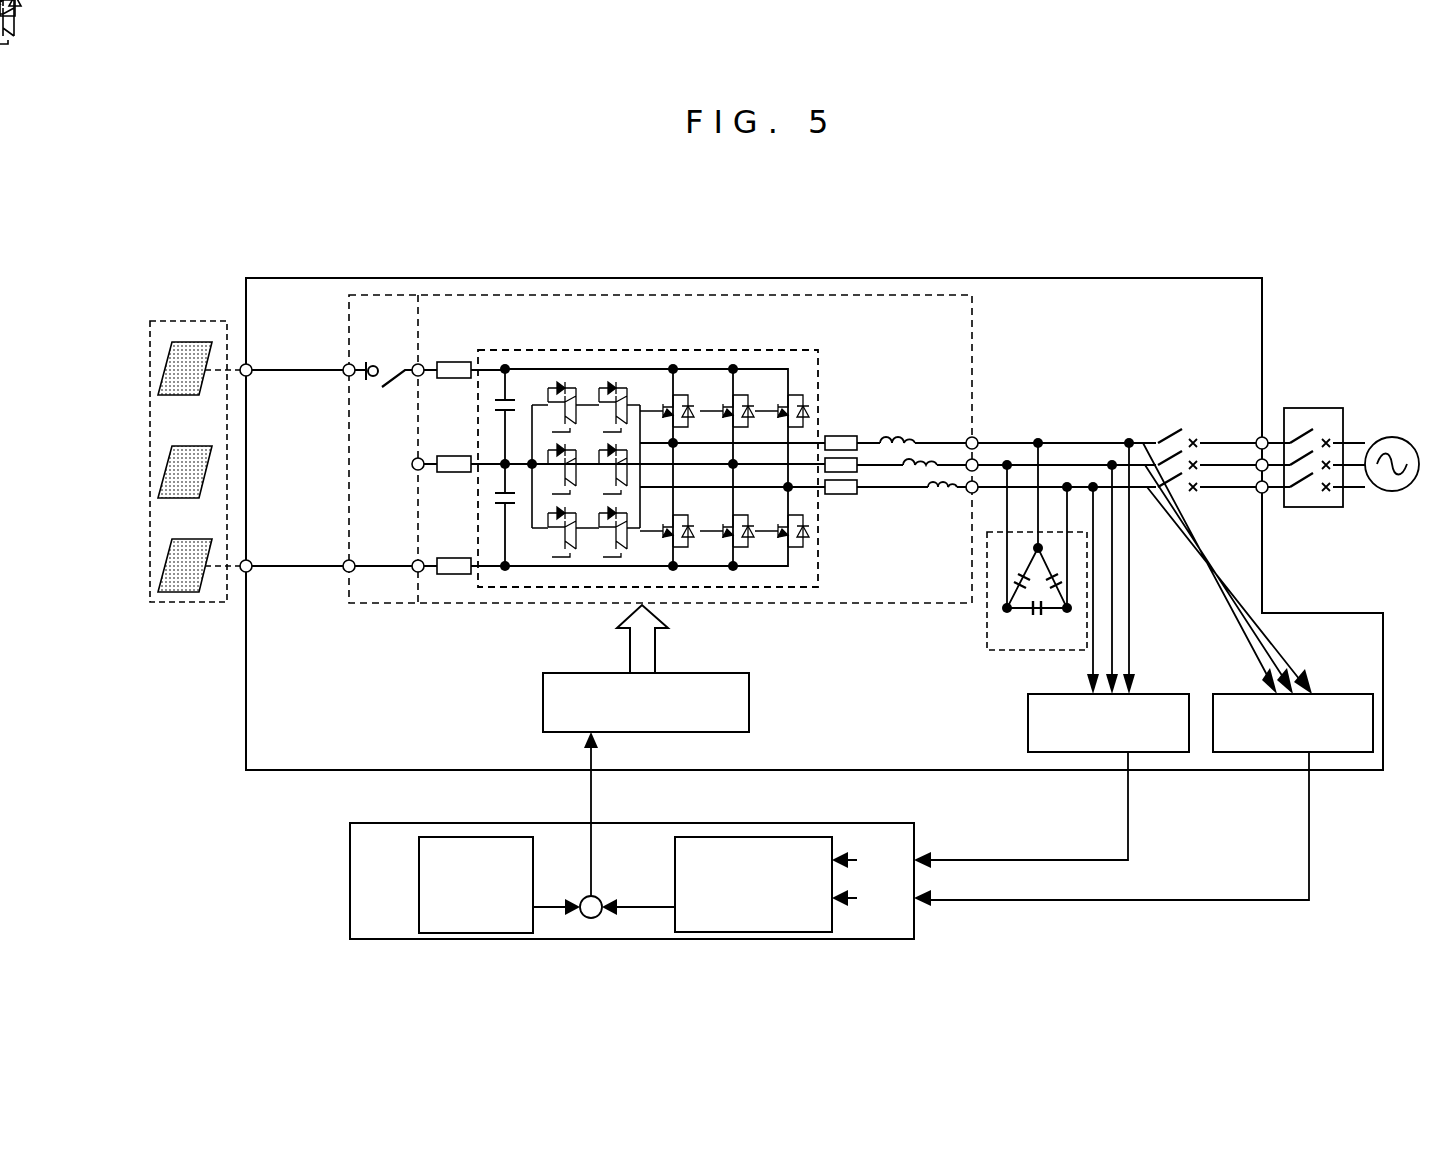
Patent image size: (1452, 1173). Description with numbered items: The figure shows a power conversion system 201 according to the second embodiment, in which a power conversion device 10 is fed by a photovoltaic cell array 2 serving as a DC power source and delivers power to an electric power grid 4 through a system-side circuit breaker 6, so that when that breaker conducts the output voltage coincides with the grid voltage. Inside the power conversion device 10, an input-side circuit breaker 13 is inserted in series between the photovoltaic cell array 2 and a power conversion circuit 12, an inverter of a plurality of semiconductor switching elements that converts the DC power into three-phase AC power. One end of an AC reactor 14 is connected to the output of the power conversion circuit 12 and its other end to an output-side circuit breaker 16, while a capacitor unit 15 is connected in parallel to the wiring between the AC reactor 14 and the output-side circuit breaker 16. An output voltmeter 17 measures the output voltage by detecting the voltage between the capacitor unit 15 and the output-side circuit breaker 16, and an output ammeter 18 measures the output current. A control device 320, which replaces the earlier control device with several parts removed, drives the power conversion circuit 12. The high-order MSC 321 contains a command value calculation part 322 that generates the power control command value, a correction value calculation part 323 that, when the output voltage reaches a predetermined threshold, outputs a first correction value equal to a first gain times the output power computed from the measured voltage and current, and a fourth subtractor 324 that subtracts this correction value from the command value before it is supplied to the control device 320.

The power conversion system 201 is at (560, 186).
The photovoltaic cell array 2 is at (210, 602).
The electric power grid 4 is at (1389, 492).
The system-side circuit breaker 6 is at (1323, 507).
The power conversion device 10 is at (302, 276).
The power conversion circuit 12 is at (767, 350).
The input-side circuit breaker 13 is at (400, 345).
The AC reactor 14 is at (886, 400).
The capacitor unit 15 is at (987, 633).
The output-side circuit breaker 16 is at (1166, 400).
The output voltmeter 17 is at (1175, 692).
The output ammeter 18 is at (1333, 694).
The control device 320 is at (543, 700).
The MSC 321 is at (350, 895).
The command value calculation part 322 is at (468, 837).
The correction value calculation part 323 is at (812, 837).
The fourth subtractor 324 is at (597, 897).